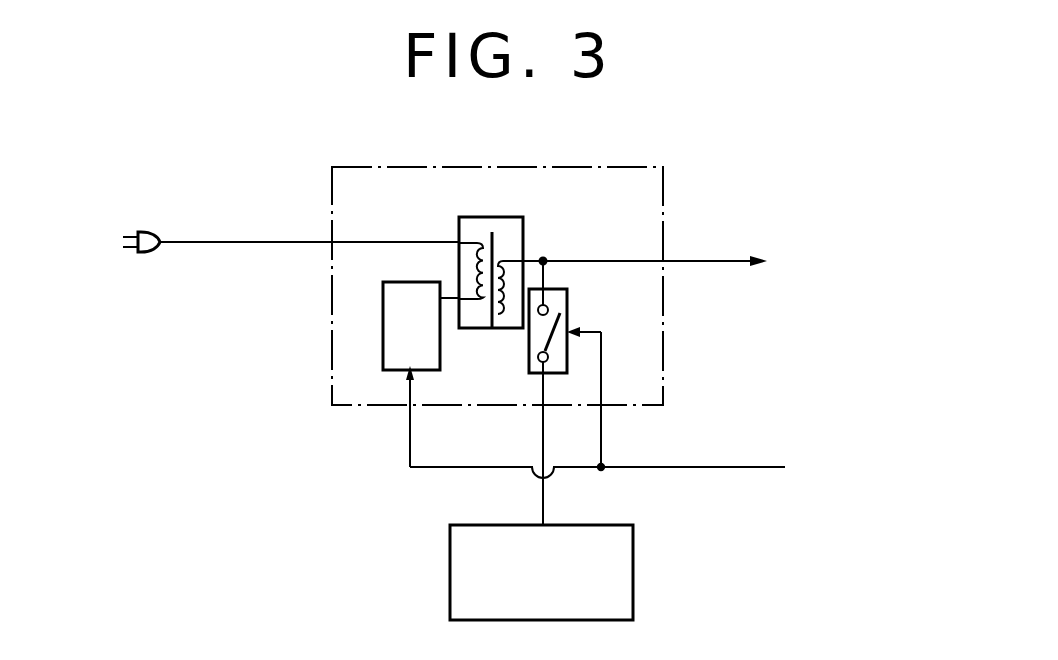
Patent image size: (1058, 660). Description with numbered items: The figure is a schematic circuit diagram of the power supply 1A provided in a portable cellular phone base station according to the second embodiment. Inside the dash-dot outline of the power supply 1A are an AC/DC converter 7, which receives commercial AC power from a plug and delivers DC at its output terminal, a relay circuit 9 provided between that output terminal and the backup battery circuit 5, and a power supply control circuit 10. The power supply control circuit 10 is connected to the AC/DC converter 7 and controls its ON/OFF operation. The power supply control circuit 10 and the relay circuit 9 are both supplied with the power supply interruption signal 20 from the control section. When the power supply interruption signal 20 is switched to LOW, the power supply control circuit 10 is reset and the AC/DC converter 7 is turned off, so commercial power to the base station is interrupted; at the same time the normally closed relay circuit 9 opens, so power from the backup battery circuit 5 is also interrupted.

The power supply 1A is at (589, 167).
The AC/DC converter 7 is at (459, 233).
The power supply control circuit 10 is at (383, 316).
The relay circuit 9 is at (568, 308).
The power supply interruption signal 20 is at (762, 468).
The backup battery circuit 5 is at (634, 572).